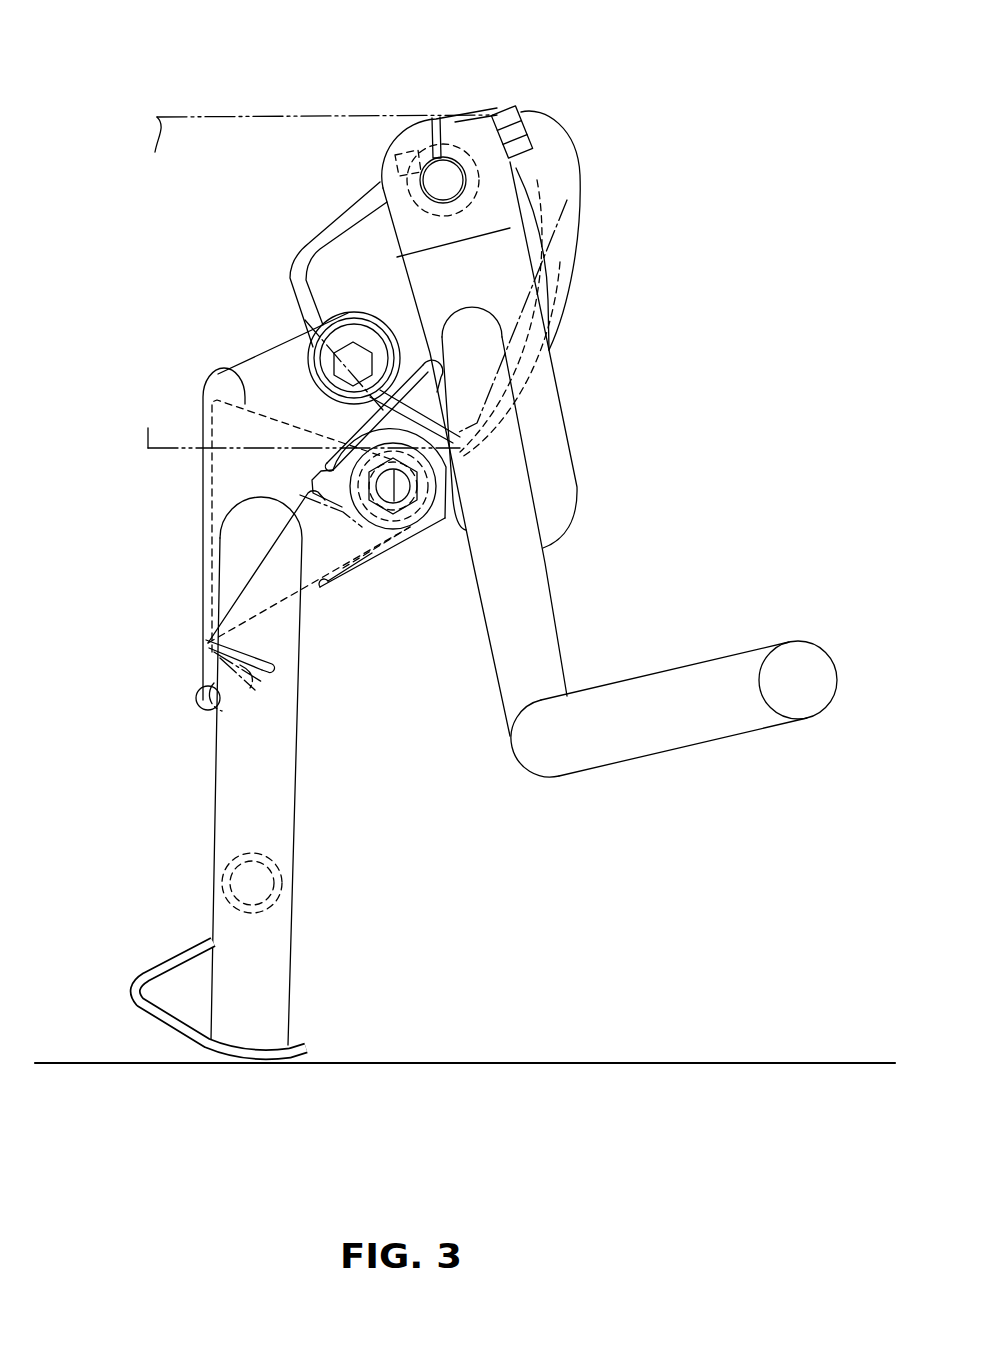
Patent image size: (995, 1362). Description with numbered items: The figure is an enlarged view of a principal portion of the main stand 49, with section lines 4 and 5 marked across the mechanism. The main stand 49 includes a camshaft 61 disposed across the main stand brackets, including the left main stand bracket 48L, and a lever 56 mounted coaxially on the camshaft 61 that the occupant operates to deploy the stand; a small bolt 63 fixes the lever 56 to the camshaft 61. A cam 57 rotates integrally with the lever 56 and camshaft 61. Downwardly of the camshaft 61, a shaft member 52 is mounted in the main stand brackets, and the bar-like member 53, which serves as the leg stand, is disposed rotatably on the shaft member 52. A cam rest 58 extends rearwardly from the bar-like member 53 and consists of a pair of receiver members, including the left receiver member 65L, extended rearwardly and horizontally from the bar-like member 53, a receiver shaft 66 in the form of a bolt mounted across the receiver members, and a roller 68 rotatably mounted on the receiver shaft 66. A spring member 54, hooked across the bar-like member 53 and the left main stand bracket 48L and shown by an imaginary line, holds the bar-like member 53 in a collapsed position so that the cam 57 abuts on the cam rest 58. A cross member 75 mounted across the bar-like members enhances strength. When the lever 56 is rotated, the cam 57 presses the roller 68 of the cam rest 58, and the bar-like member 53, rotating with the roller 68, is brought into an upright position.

The left main stand bracket 48L is at (270, 117).
The main stand 49 is at (168, 806).
The shaft member 52 is at (318, 338).
The bar-like member 53 is at (242, 761).
The spring member 54 is at (257, 567).
The lever 56 is at (539, 598).
The cam 57 is at (553, 298).
The cam rest 58 is at (358, 574).
The camshaft 61 is at (455, 180).
The small bolt 63 is at (512, 136).
The left receiver member 65L is at (222, 368).
The receiver shaft 66 is at (400, 495).
The roller 68 is at (327, 465).
The cross member 75 is at (225, 878).
The line 4- 4 is at (438, 240).
The section line 5- 5 is at (350, 186).